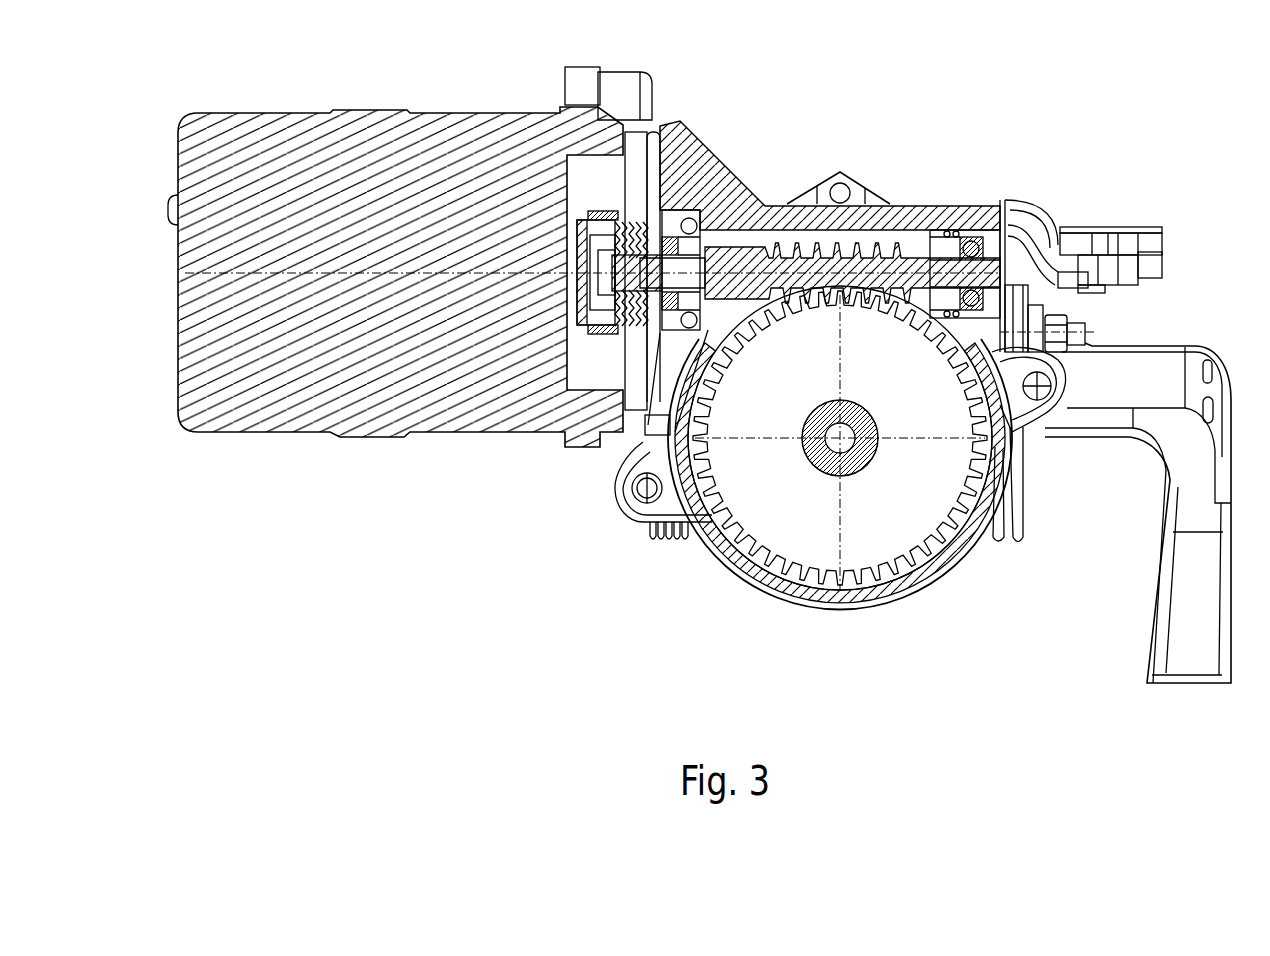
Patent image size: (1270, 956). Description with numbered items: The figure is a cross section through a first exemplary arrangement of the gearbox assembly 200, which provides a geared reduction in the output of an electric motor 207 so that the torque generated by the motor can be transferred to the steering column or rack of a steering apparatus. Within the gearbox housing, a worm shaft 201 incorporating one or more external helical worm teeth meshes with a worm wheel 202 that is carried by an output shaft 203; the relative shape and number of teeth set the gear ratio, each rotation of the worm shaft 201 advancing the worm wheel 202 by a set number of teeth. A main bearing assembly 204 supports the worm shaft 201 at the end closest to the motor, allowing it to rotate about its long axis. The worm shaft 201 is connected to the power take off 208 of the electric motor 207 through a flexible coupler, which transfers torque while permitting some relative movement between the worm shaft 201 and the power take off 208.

The gearbox assembly 200 is at (601, 503).
The worm shaft 201 is at (890, 245).
The worm wheel 202 is at (943, 567).
The output shaft 203 is at (832, 472).
The main bearing assembly 204 is at (606, 345).
The electric motor 207 is at (565, 273).
The power take off of the motor 208 is at (237, 437).